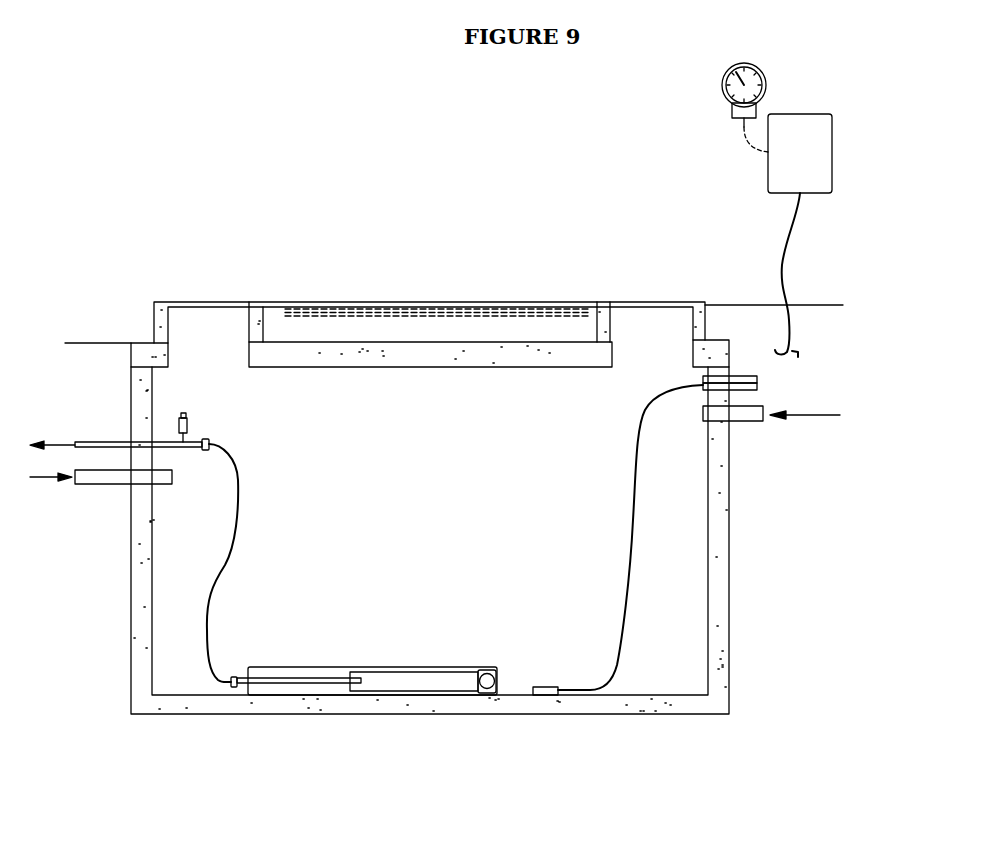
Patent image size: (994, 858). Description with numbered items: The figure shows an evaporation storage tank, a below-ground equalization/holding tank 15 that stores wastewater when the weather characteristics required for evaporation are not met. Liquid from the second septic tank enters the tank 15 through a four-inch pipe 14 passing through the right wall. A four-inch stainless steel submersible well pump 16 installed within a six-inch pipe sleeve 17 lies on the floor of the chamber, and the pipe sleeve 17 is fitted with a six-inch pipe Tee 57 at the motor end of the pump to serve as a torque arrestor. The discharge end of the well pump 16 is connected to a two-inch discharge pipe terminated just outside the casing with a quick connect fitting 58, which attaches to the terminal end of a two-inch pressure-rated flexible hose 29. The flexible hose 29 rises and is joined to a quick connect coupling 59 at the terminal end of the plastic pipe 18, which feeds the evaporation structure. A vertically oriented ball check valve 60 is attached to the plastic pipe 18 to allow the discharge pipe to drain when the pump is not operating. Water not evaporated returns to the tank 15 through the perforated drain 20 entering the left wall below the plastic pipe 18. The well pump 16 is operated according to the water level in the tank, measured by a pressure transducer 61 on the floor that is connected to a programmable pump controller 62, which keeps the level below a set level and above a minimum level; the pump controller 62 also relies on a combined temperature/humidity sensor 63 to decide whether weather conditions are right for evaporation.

The pipe 14 is at (752, 421).
The equalization/holding tank 15 is at (730, 668).
The well pump 16 is at (430, 671).
The pipe sleeve 17 is at (320, 667).
The plastic pipe 18 is at (97, 442).
The perforated drain 20 is at (108, 487).
The flexible hose 29 is at (231, 522).
The pipe Tee 57 is at (492, 670).
The quick connect fitting 58 is at (235, 676).
The quick connect coupling 59 is at (208, 440).
The ball check valve 60 is at (187, 420).
The pressure transducer 61 is at (540, 687).
The pump controller 62 is at (768, 183).
The temperature/humidity sensor 63 is at (733, 117).